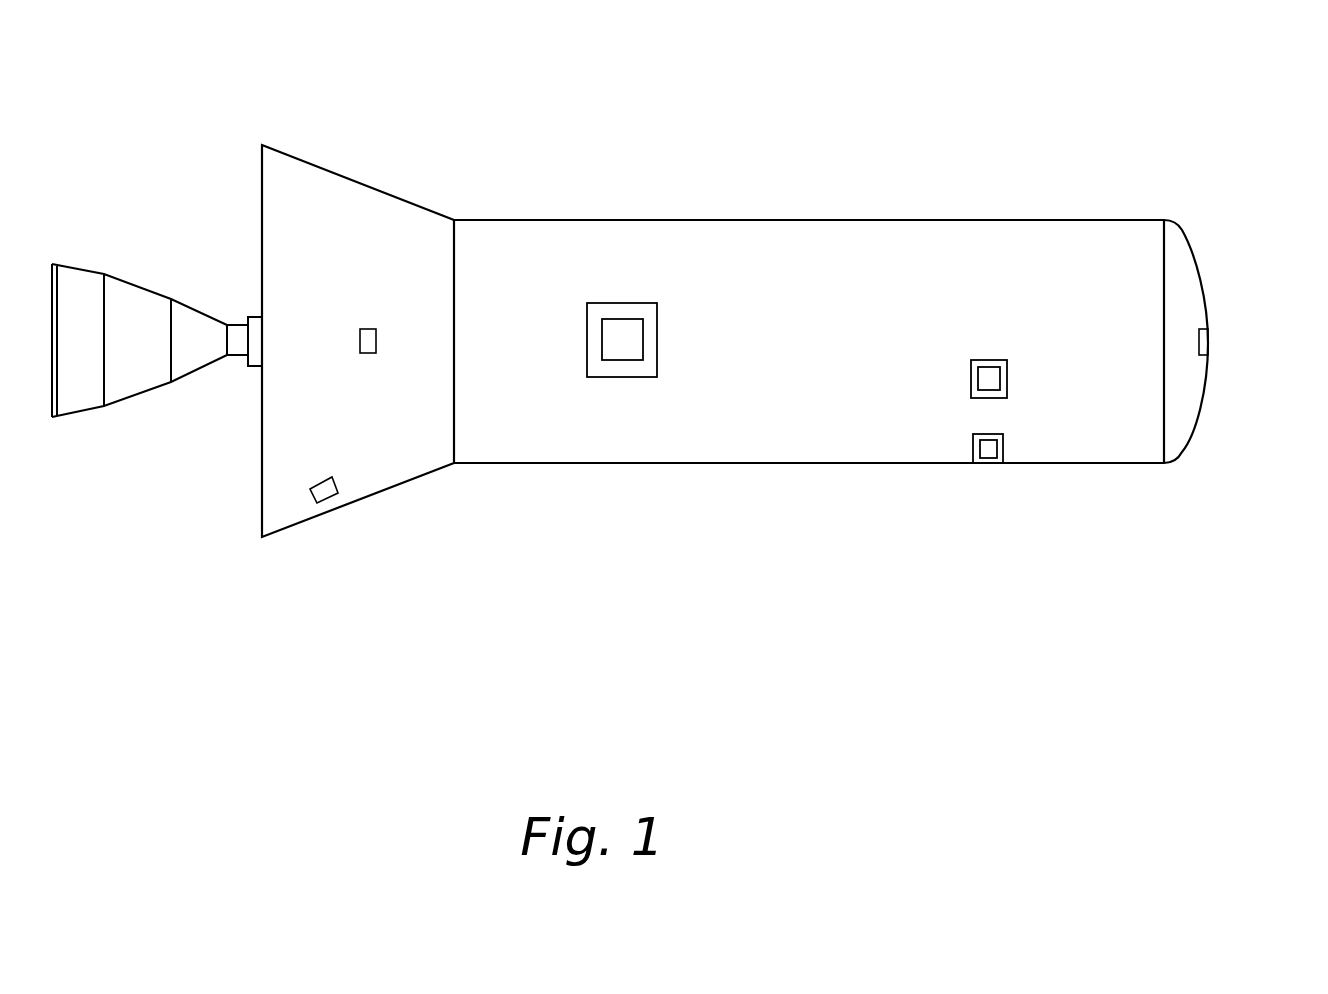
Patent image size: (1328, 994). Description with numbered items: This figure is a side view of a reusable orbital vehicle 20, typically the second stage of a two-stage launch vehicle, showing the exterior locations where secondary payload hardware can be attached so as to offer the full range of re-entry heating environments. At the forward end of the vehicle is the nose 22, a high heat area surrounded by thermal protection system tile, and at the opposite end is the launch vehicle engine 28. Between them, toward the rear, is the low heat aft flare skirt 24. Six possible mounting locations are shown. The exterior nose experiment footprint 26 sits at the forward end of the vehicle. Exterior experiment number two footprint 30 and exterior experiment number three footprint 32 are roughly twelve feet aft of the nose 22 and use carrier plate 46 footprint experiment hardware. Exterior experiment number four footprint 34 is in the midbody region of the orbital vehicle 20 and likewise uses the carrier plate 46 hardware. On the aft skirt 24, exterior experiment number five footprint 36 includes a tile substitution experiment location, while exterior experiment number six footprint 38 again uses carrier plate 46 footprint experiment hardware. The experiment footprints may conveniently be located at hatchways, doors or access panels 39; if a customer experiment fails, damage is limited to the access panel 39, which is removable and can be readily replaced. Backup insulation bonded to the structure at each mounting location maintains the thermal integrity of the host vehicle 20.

The reusable orbital vehicle 20 is at (700, 219).
The nose 22 is at (1185, 268).
The aft skirt 24 is at (335, 172).
The exterior nose experiment footprint 26 is at (1206, 342).
The launch vehicle engine 28 is at (130, 402).
The exterior experiment number 2 footprint 30 is at (987, 450).
The exterior experiment number 3 footprint 32 is at (990, 380).
The exterior experiment number 4 footprint 34 is at (627, 346).
The exterior experiment number 5 footprint 36 is at (328, 502).
The exterior experiment number 6 footprint 38 is at (368, 354).
The access panel 39 is at (603, 378).
The carrier plate 46 is at (634, 362).